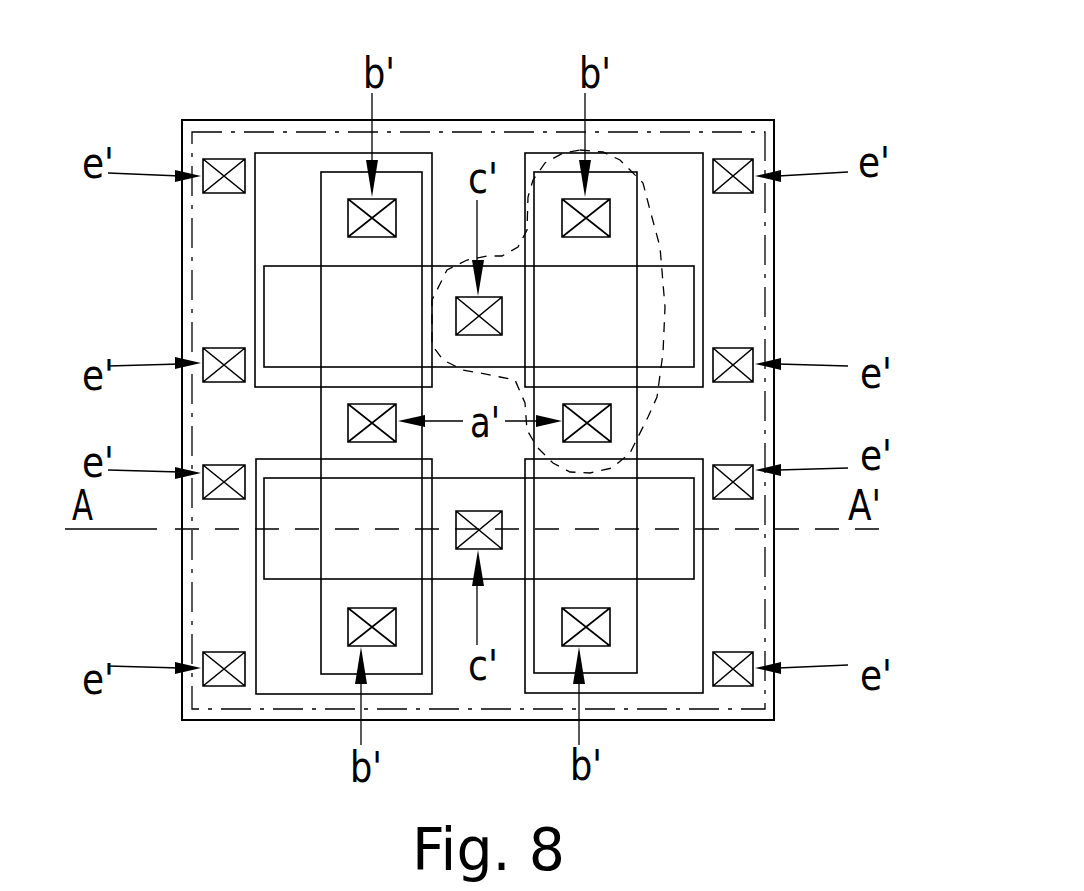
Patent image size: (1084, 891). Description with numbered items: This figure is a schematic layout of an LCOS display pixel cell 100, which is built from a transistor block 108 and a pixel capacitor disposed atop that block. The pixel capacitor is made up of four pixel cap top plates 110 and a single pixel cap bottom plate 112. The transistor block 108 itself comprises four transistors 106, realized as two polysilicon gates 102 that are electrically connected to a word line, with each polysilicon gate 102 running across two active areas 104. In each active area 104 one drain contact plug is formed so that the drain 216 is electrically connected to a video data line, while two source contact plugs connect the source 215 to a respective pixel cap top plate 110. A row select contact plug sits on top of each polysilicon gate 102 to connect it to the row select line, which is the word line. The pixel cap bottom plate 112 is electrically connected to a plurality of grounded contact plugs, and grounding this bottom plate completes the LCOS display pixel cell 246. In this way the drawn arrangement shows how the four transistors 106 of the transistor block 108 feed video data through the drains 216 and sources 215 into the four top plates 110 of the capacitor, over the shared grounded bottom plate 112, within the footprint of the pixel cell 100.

The LCOS display pixel cell 100 is at (826, 728).
The polysilicon gate 102 is at (290, 320).
The active area 104 is at (423, 653).
The transistor 106 is at (668, 210).
The transistor block 108 is at (765, 278).
The pixel cap top plate 110 is at (267, 222).
The pixel cap bottom plate 112 is at (775, 325).
The source 215 is at (333, 188).
The drain 216 is at (338, 425).
The LCOS display pixel cell 246 is at (840, 62).